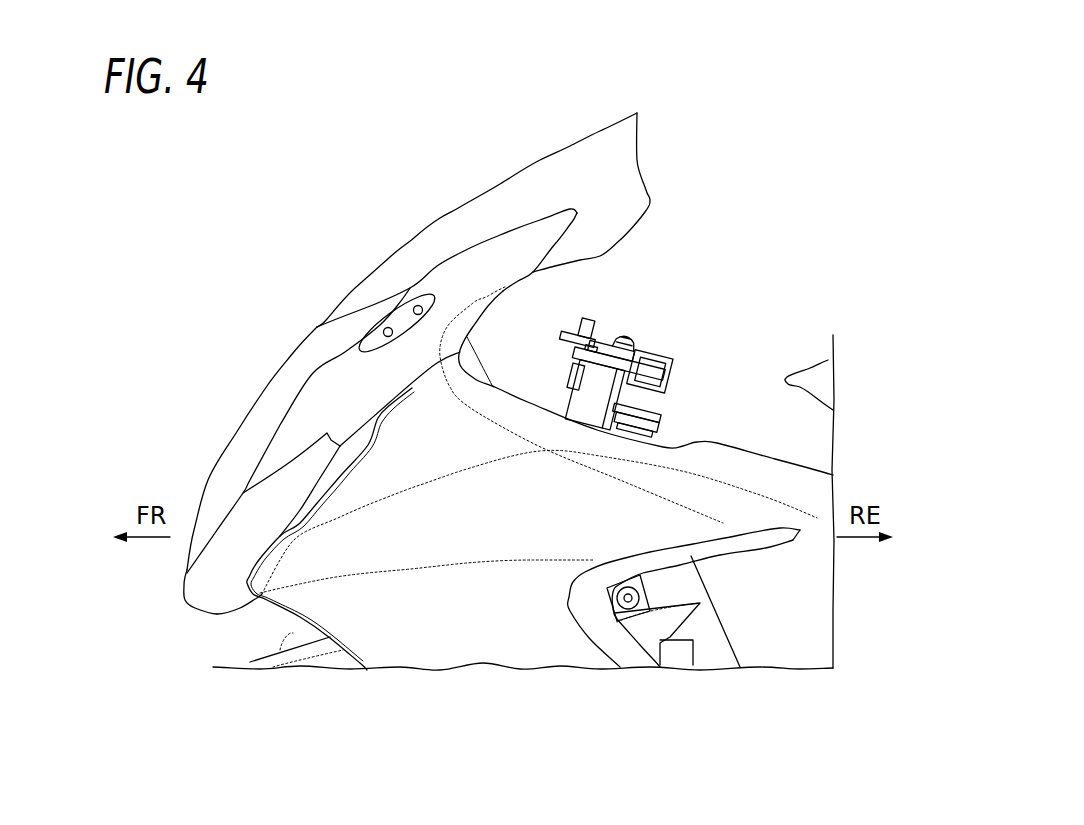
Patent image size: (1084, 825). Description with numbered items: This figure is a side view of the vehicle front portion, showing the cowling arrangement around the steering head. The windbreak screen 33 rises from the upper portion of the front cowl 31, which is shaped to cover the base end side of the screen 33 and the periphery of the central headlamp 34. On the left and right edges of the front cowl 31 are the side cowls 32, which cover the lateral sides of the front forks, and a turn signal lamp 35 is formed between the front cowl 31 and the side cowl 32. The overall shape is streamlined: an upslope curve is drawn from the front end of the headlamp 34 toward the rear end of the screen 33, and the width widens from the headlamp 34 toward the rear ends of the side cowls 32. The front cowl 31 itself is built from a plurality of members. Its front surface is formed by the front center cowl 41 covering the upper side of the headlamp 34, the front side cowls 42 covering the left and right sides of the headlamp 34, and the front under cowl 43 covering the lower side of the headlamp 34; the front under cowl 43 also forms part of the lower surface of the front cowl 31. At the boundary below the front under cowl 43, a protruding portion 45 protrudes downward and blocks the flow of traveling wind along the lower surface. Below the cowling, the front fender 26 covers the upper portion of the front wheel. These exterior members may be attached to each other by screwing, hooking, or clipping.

The front fender 26 is at (293, 633).
The front cowl 31 is at (284, 322).
The side cowl 32 is at (510, 657).
The windbreak screen 33 is at (590, 127).
The headlamp 34 is at (227, 442).
The turn signal lamp 35 is at (347, 425).
The front center cowl 41 is at (316, 332).
The front side cowl 42 is at (497, 303).
The front under cowl 43 is at (193, 603).
The protruding portion 45 is at (240, 613).